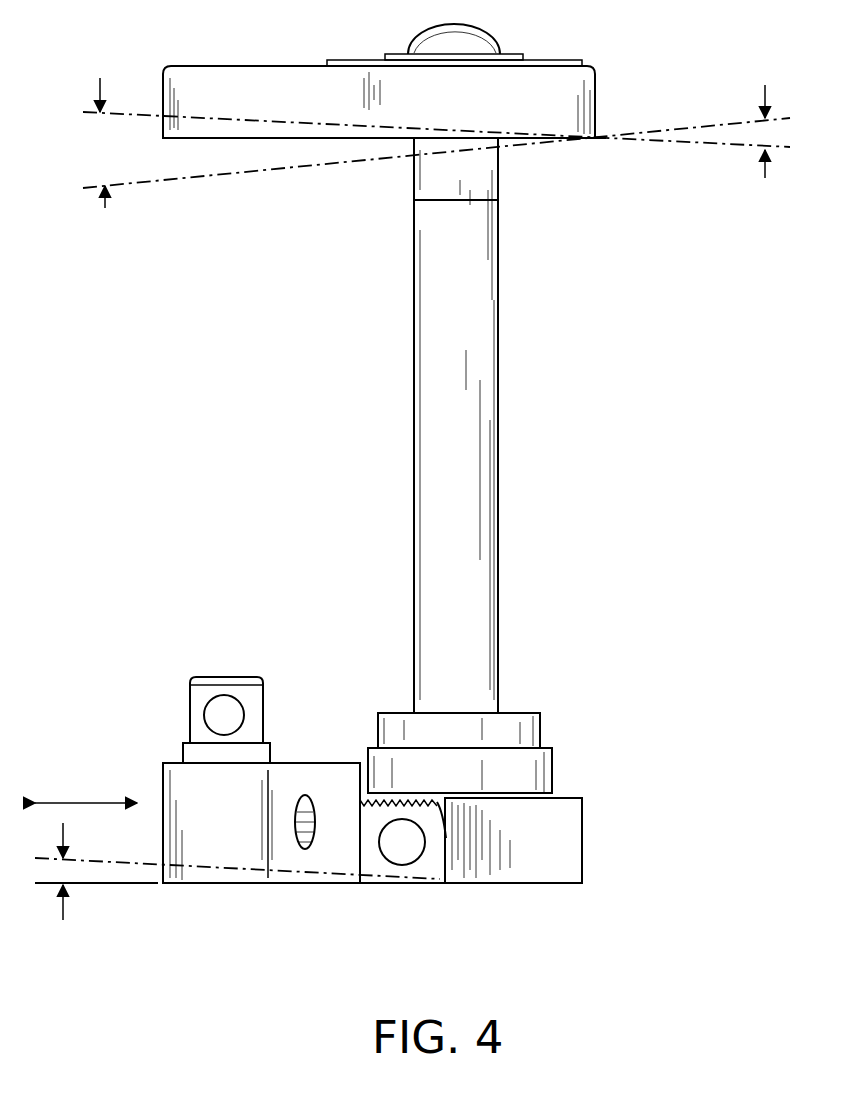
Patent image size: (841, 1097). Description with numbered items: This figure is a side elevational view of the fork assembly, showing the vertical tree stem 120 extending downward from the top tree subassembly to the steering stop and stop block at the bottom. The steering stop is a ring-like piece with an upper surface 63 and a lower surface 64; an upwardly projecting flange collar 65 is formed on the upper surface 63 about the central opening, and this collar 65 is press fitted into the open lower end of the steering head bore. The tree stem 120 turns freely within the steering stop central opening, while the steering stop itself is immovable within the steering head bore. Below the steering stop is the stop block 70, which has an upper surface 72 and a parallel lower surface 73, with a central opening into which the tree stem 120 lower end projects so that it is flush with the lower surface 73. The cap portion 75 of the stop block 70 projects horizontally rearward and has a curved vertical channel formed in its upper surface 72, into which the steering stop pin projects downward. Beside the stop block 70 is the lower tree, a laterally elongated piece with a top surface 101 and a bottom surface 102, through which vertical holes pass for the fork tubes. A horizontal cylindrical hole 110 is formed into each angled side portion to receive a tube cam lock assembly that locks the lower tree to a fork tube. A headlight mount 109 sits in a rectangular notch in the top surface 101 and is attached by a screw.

The tree stem 120 is at (500, 297).
The flange collar 65 is at (540, 723).
The upper surface 63 is at (548, 745).
The lower surface 64 is at (533, 792).
The upper surface 72 is at (575, 797).
The stop block 70 is at (583, 833).
The cap portion 75 is at (573, 862).
The lower surface 73 is at (552, 883).
The top surface 101 is at (173, 762).
The bottom surface 102 is at (190, 880).
The headlight mount 109 is at (240, 682).
The horizontal cylindrical hole 110 is at (318, 842).